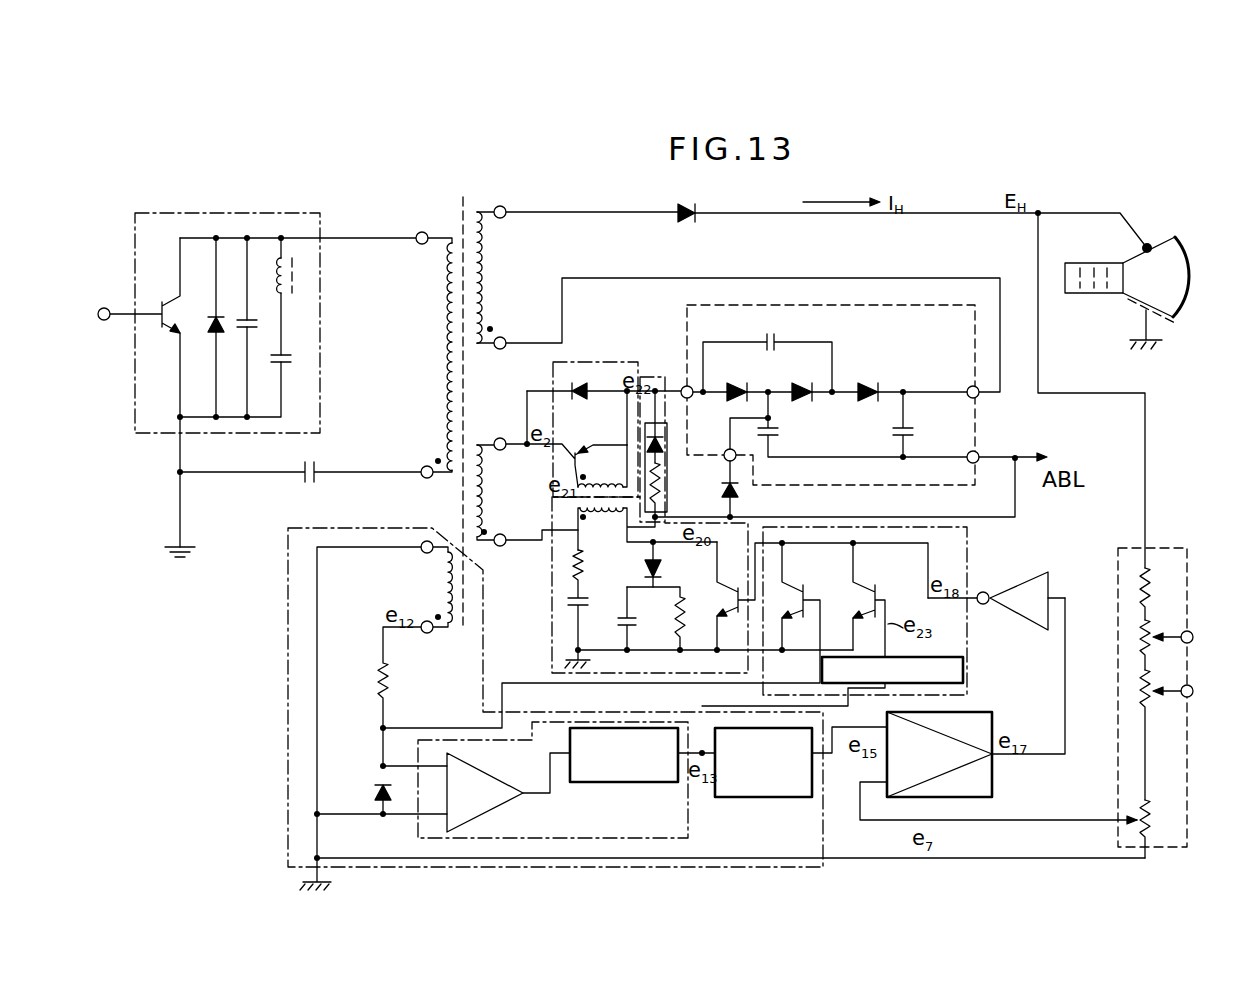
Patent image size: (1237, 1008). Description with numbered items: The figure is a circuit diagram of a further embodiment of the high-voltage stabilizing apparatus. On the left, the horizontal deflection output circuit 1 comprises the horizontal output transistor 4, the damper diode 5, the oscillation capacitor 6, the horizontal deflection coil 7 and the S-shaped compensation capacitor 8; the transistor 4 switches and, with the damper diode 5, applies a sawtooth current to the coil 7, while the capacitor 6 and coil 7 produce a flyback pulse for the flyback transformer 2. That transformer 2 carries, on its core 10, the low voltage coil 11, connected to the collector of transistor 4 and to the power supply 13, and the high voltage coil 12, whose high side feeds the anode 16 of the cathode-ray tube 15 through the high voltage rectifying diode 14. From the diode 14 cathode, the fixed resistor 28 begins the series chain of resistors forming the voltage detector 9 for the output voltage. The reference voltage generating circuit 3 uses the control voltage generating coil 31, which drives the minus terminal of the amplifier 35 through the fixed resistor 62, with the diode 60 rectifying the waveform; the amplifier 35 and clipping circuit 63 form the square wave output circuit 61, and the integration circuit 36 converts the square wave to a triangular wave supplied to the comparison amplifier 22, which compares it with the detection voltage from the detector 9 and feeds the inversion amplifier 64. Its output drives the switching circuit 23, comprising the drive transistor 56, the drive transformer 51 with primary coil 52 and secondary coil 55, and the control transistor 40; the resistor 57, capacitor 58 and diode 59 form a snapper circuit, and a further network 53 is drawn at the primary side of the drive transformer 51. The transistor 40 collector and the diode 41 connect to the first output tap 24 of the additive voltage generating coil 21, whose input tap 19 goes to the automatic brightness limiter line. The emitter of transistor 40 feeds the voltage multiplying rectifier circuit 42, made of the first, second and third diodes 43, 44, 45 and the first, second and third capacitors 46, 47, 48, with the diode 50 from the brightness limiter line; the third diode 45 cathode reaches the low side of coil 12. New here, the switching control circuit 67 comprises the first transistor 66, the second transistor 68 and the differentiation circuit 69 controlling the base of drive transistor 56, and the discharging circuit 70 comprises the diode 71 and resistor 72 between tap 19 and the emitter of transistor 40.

The horizontal deflection output circuit 1 is at (148, 212).
The flyback transformer 2 is at (504, 210).
The reference voltage generating circuit 3 is at (287, 700).
The horizontal output transistor 4 is at (172, 333).
The damper diode 5 is at (212, 321).
The oscillation capacitor 6 is at (240, 330).
The horizontal deflection coil 7 is at (278, 276).
The S-shaped compensation capacitor 8 is at (277, 364).
The voltage detector 9 is at (1187, 762).
The core 10 is at (452, 497).
The low voltage coil 11 is at (448, 362).
The high voltage coil 12 is at (484, 270).
The power supply 13 is at (310, 480).
The high voltage rectifying diode 14 is at (690, 222).
The cathode-ray tube 15 is at (1190, 262).
The anode 16 is at (1150, 242).
The input tap 19 is at (502, 534).
The additive voltage generating coil 21 is at (483, 487).
The comparison amplifier 22 is at (992, 778).
The switching circuit 23 is at (546, 620).
The first output tap 24 is at (500, 438).
The fixed resistor 28 is at (1148, 572).
The control voltage generating coil 31 is at (445, 582).
The amplifier 35 is at (508, 808).
The integration circuit 36 is at (782, 800).
The control transistor 40 is at (584, 452).
The diode 41 is at (566, 380).
The voltage multiplying rectifier circuit 42 is at (922, 305).
The first diode 43 is at (738, 385).
The second diode 44 is at (806, 385).
The third diode 45 is at (866, 380).
The first capacitor 46 is at (772, 330).
The second capacitor 47 is at (780, 434).
The third capacitor 48 is at (912, 434).
The diode 50 is at (738, 490).
The drive transformer 51 is at (575, 505).
The primary coil 52 is at (606, 516).
The resistor-capacitor network 53 is at (565, 598).
The secondary coil 55 is at (596, 487).
The drive transistor 56 is at (732, 586).
The resistor 57 is at (686, 622).
The capacitor 58 is at (638, 624).
The diode 59 is at (664, 568).
The diode 60 is at (378, 790).
The square wave output circuit 61 is at (690, 798).
The fixed resistor 62 is at (390, 686).
The clipping circuit 63 is at (628, 784).
The inversion amplifier 64 is at (1012, 586).
The first transistor 66 is at (806, 586).
The switching control circuit 67 is at (968, 636).
The second transistor 68 is at (870, 588).
The differentiation circuit 69 is at (964, 686).
The discharging circuit 70 is at (666, 372).
The diode 71 is at (664, 450).
The resistor 72 is at (666, 485).